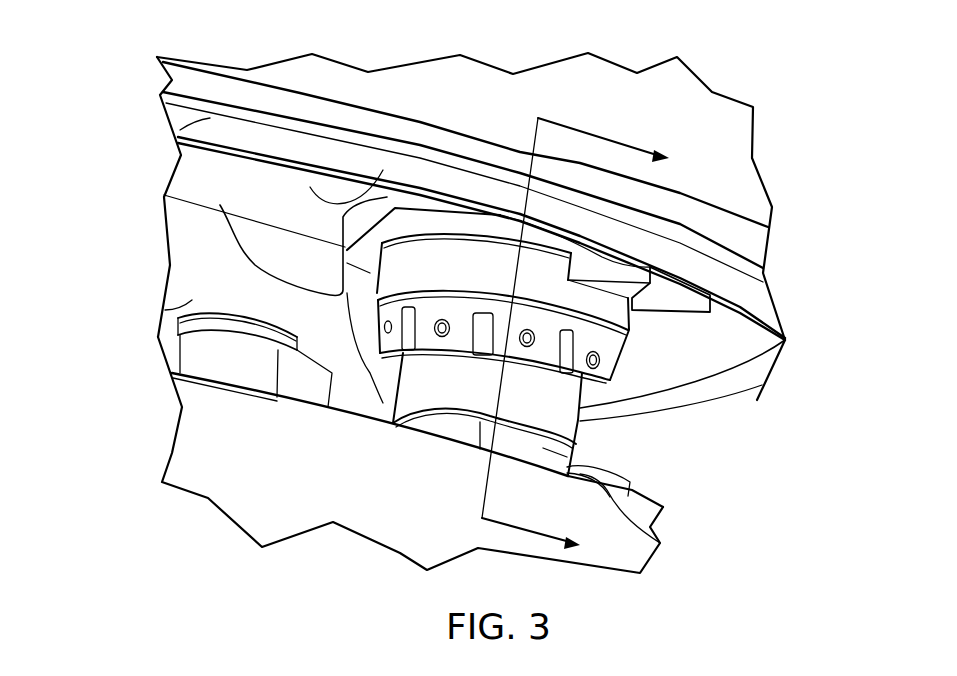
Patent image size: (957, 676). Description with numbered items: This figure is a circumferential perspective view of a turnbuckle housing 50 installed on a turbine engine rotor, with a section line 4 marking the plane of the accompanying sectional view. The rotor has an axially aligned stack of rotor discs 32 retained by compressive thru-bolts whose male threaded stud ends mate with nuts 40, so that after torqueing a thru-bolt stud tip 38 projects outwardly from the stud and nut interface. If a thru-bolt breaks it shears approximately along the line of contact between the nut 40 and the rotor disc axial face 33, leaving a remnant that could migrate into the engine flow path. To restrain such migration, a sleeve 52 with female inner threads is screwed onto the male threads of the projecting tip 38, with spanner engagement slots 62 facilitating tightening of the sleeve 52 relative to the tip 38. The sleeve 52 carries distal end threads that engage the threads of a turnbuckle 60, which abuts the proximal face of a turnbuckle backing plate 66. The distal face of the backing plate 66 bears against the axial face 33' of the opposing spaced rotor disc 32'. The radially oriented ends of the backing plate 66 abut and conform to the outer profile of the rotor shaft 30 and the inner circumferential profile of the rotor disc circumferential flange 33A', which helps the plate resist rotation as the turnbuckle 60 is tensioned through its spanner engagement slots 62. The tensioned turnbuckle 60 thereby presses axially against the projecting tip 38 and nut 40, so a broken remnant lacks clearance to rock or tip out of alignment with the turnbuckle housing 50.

The section line 4- 4 is at (586, 340).
The rotor shaft 30 is at (165, 310).
The rotor disc 32 is at (443, 494).
The opposing spaced rotor disc 32' is at (512, 237).
The rotor disc axial face 33 is at (407, 405).
The axial face of opposing rotor disc 33' is at (424, 115).
The rotor disc circumferential flange 33A' is at (142, 112).
The thru-bolt stud tip 38 is at (232, 313).
The nut 40 is at (217, 363).
The turnbuckle housing 50 is at (220, 205).
The sleeve 52 is at (627, 423).
The turnbuckle 60 is at (655, 337).
The spanner engagement slots 62 is at (553, 410).
The turnbuckle backing plate 66 is at (652, 267).